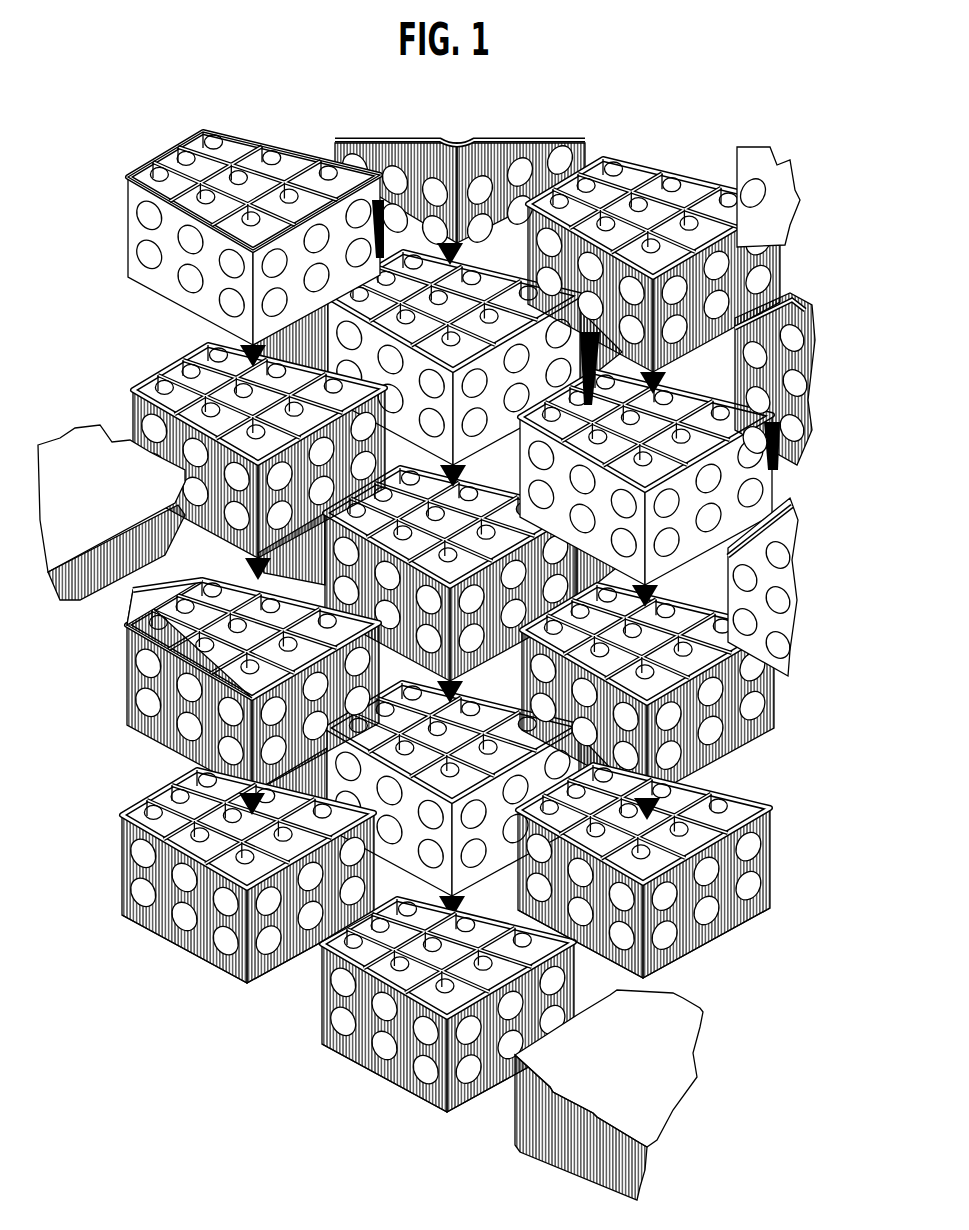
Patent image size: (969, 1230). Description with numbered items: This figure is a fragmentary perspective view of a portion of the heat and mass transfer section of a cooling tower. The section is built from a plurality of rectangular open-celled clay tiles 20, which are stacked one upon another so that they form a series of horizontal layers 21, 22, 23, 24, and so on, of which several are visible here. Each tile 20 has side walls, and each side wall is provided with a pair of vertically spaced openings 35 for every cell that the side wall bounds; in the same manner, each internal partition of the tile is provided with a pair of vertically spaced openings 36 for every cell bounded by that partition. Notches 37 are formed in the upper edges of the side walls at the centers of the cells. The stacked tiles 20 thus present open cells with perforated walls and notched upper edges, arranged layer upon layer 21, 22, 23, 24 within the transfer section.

The open-celled clay tile 20 is at (687, 152).
The horizontal layer 21 is at (150, 788).
The horizontal layer 22 is at (148, 598).
The horizontal layer 23 is at (195, 362).
The horizontal layer 24 is at (138, 172).
The openings 35 is at (222, 955).
The openings 36 is at (808, 375).
The notches 37 is at (150, 198).